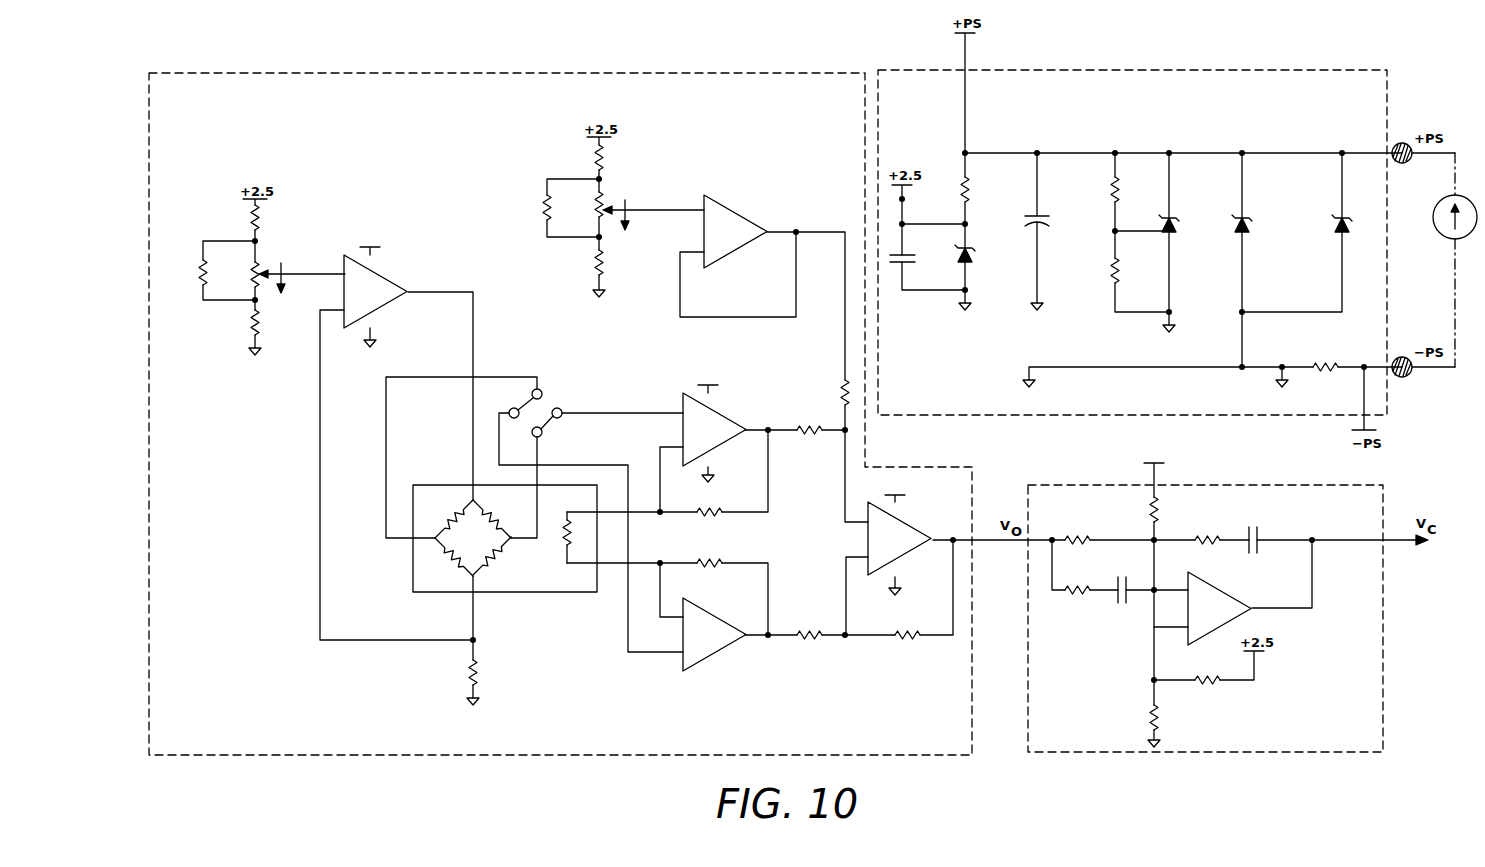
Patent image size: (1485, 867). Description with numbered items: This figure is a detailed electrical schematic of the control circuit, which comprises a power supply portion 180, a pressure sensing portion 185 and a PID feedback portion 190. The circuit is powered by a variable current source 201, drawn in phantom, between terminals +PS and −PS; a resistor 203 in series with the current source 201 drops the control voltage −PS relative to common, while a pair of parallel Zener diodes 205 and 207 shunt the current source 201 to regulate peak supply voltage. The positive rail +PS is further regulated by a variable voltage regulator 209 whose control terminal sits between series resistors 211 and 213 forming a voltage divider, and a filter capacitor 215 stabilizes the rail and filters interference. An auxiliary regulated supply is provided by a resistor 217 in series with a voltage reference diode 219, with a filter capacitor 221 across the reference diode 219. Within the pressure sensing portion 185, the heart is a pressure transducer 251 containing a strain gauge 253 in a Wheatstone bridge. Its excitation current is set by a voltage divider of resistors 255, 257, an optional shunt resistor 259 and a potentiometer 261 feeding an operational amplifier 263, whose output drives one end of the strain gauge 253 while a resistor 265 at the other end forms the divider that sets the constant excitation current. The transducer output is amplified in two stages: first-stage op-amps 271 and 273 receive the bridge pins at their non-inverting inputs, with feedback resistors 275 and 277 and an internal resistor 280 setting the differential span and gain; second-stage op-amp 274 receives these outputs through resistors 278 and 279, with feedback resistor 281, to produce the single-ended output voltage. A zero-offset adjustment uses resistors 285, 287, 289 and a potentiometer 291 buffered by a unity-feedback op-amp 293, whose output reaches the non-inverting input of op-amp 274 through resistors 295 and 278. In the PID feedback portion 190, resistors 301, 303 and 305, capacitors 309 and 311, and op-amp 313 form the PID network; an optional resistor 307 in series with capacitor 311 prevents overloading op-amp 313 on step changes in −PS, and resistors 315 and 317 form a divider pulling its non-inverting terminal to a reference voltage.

The pressure sensing portion 185 is at (432, 73).
The power supply portion 180 is at (1278, 70).
The PID feedback portion 190 is at (1383, 685).
The variable current source 201 is at (1440, 235).
The resistor 203 is at (1323, 362).
The Zener diode 205 is at (1338, 226).
The Zener diode 207 is at (1247, 228).
The variable voltage regulator 209 is at (1176, 226).
The resistor 211 is at (1120, 192).
The resistor 213 is at (1110, 272).
The filter capacitor 215 is at (1042, 218).
The resistor 217 is at (960, 190).
The voltage reference diode 219 is at (972, 252).
The filter capacitor 221 is at (892, 268).
The pressure transducer 251 is at (585, 592).
The strain gauge 253 is at (462, 498).
The resistor 255 is at (252, 320).
The resistor 257 is at (262, 226).
The resistor 259 is at (200, 268).
The potentiometer 261 is at (252, 282).
The operational amplifier 263 is at (385, 285).
The resistor 265 is at (478, 672).
The operational amplifier 271 is at (718, 420).
The operational amplifier 273 is at (700, 665).
The operational amplifier 274 is at (907, 565).
The resistor 275 is at (705, 512).
The resistor 277 is at (715, 563).
The resistor 278 is at (808, 440).
The resistor 279 is at (810, 628).
The resistor 280 is at (563, 540).
The resistor 281 is at (905, 645).
The resistor 285 is at (604, 255).
The resistor 287 is at (606, 165).
The resistor 289 is at (540, 212).
The potentiometer 291 is at (596, 213).
The operational amplifier 293 is at (725, 205).
The resistor 295 is at (842, 392).
The resistor 301 is at (1207, 535).
The resistor 303 is at (1070, 535).
The resistor 305 is at (1150, 512).
The resistor 307 is at (1076, 600).
The capacitor 309 is at (1258, 535).
The capacitor 311 is at (1116, 605).
The operational amplifier 313 is at (1225, 600).
The resistor 315 is at (1150, 722).
The resistor 317 is at (1205, 685).